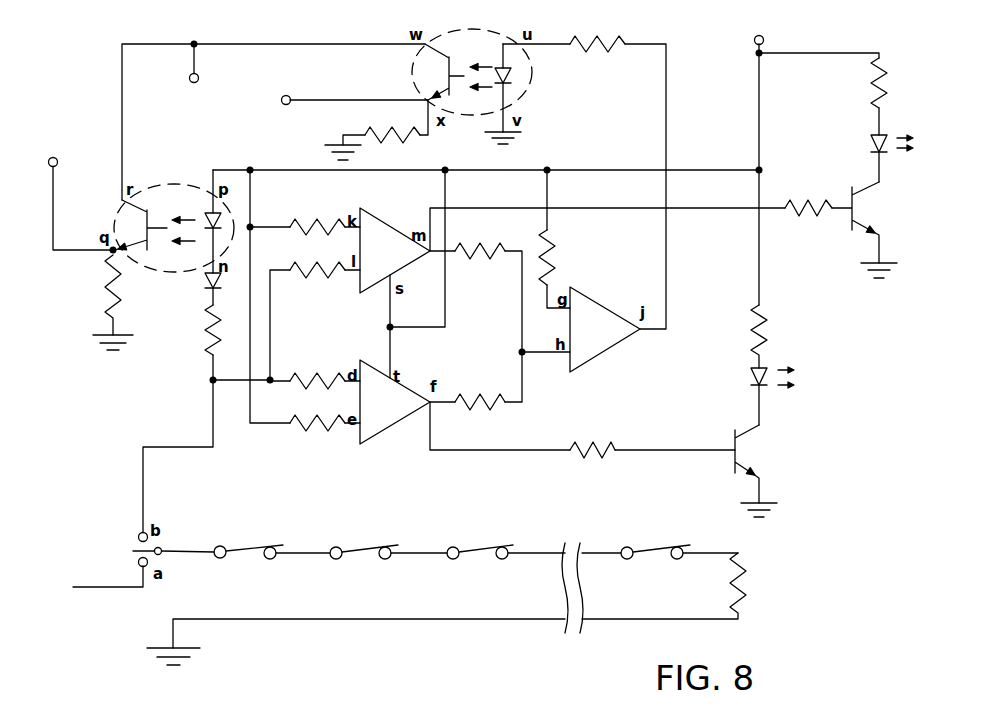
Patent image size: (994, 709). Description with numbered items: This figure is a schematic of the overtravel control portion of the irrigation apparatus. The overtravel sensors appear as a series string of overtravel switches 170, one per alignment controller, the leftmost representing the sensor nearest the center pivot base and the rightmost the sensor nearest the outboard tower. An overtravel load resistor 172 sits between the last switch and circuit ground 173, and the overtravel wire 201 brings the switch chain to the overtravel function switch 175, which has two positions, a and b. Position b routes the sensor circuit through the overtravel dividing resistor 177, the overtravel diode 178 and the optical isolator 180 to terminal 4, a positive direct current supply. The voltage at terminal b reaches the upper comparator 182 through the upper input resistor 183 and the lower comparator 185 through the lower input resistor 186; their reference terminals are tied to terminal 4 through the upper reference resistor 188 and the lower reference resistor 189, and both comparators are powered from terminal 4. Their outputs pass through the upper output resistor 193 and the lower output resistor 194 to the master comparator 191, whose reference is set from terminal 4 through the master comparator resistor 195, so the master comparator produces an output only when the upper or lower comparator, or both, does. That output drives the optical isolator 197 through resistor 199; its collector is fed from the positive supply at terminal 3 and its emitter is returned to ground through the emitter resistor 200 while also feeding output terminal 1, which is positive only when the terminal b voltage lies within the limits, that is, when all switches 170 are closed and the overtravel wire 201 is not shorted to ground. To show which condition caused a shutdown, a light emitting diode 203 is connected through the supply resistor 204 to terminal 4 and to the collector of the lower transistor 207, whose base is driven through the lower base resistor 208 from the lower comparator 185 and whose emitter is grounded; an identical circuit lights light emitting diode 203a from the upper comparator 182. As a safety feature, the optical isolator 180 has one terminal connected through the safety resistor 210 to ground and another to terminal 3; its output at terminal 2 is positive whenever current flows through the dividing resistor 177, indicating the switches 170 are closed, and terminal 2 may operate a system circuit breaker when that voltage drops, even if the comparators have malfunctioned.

The output terminal 1 is at (280, 100).
The output terminal 2 is at (45, 163).
The supply voltage terminal 3 is at (193, 90).
The terminal 4 is at (750, 40).
The overtravel switches 170 is at (355, 540).
The overtravel load resistor 172 is at (749, 594).
The circuit ground 173 is at (262, 619).
The overtravel function switch 175 is at (162, 536).
The overtravel dividing resistor 177 is at (208, 350).
The overtravel diode 178 is at (207, 285).
The optical isolator 180 is at (182, 186).
The upper comparator 182 is at (394, 224).
The upper input resistor 183 is at (312, 272).
The lower comparator 185 is at (374, 366).
The lower input resistor 186 is at (312, 380).
The upper reference resistor 188 is at (319, 220).
The lower reference resistor 189 is at (313, 425).
The master comparator 191 is at (594, 357).
The upper output resistor 193 is at (480, 262).
The lower output resistor 194 is at (470, 394).
The master comparator resistor 195 is at (560, 244).
The optical isolator 197 is at (529, 89).
The resistor 199 is at (594, 47).
The emitter resistor 200 is at (397, 139).
The overtravel wire 201 is at (522, 549).
The light emitting diode 203 is at (751, 379).
The light emitting diode 203a is at (870, 150).
The supply resistor 204 is at (767, 345).
The lower transistor 207 is at (735, 443).
The lower base resistor 208 is at (592, 448).
The safety resistor 210 is at (110, 299).